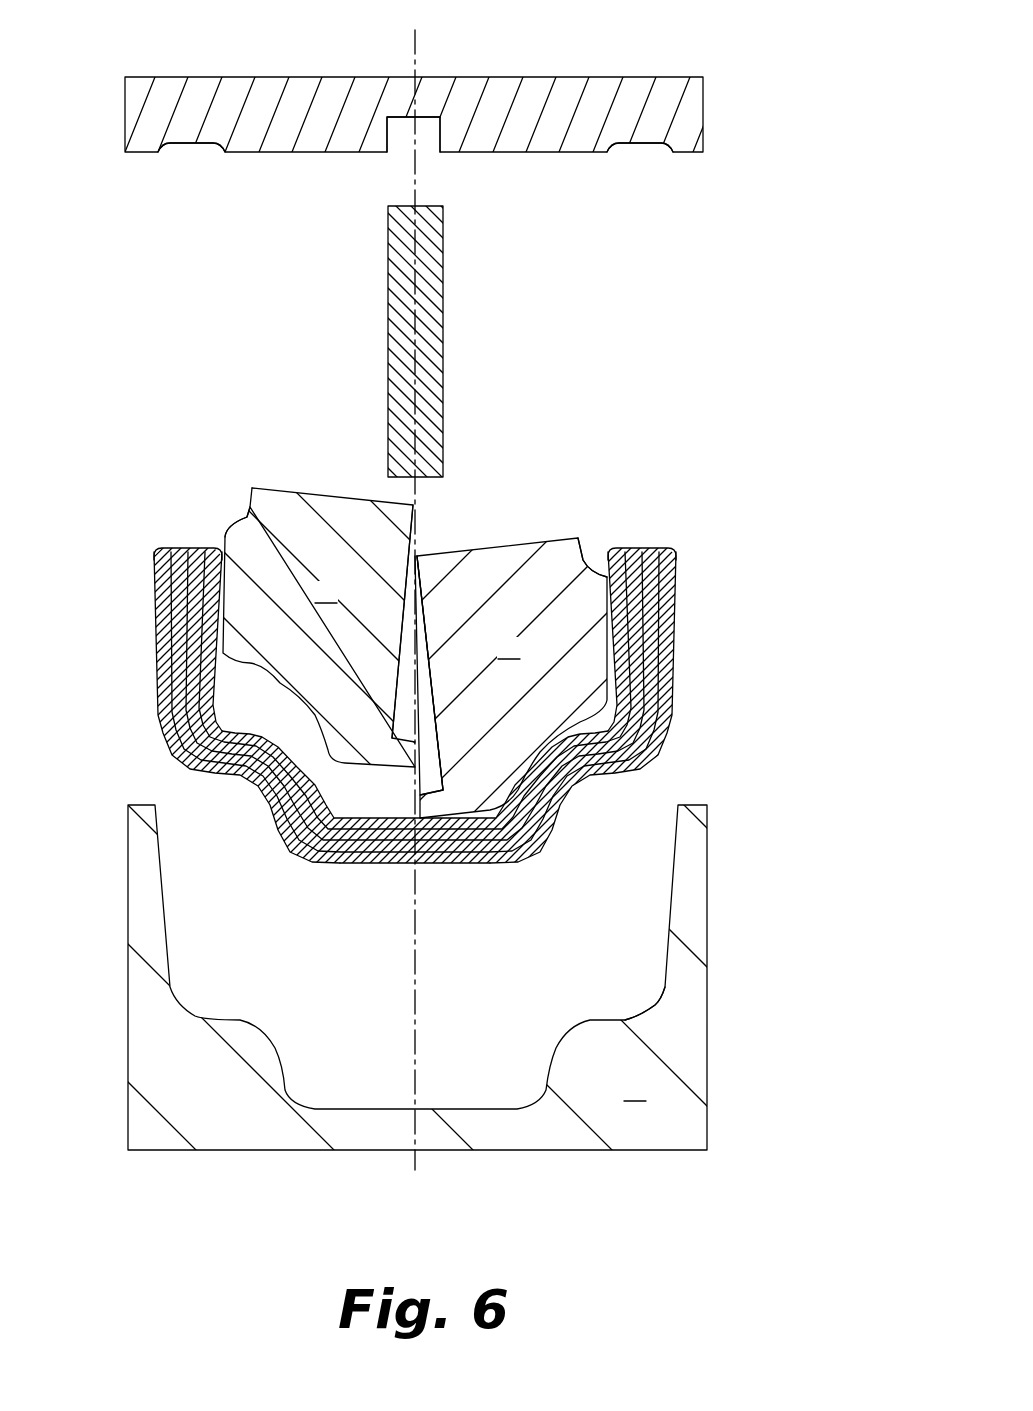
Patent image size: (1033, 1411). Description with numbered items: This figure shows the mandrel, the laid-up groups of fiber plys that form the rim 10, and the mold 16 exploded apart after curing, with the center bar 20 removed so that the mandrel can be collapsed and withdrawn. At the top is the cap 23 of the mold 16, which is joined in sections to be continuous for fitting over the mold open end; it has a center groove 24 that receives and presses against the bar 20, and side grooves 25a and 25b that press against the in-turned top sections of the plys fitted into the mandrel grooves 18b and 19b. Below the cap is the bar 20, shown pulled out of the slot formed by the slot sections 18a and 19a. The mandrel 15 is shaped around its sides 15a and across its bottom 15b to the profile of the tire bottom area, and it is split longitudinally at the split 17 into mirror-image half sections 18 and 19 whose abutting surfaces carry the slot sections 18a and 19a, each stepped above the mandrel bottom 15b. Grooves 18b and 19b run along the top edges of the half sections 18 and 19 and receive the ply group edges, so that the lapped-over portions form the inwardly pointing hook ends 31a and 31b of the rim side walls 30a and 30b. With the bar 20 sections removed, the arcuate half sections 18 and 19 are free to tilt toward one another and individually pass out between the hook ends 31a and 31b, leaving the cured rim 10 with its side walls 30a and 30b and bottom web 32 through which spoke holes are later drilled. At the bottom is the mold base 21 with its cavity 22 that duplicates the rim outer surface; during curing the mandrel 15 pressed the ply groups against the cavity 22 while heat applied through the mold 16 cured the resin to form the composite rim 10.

The rim 10 is at (423, 729).
The mandrel 15 is at (393, 708).
The mandrel sides 15a is at (213, 620).
The mandrel bottom 15b is at (350, 778).
The mold 16 is at (516, 980).
The split 17 is at (397, 772).
The mandrel half section 18 is at (335, 600).
The slot section 18a is at (375, 593).
The groove 18b is at (247, 507).
The mandrel half section 19 is at (479, 661).
The slot section 19a is at (444, 622).
The groove 19b is at (587, 547).
The bar 20 is at (446, 312).
The mold base 21 is at (516, 980).
The cavity 22 is at (652, 1004).
The cap 23 is at (617, 82).
The center groove 24 is at (403, 122).
The side groove 25a is at (180, 148).
The side groove 25b is at (642, 150).
The rim side wall 30a is at (172, 655).
The rim side wall 30b is at (673, 670).
The hook end 31a is at (198, 550).
The hook end 31b is at (647, 547).
The rim bottom web 32 is at (500, 822).